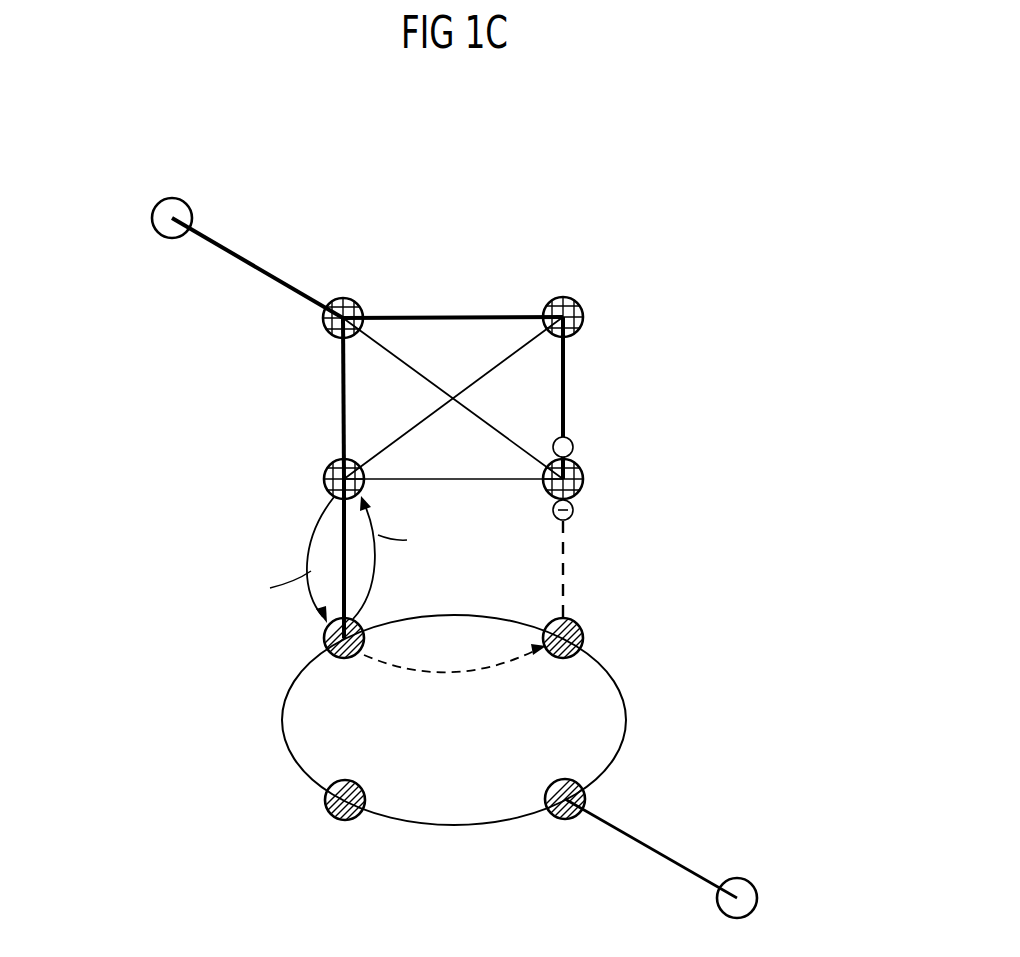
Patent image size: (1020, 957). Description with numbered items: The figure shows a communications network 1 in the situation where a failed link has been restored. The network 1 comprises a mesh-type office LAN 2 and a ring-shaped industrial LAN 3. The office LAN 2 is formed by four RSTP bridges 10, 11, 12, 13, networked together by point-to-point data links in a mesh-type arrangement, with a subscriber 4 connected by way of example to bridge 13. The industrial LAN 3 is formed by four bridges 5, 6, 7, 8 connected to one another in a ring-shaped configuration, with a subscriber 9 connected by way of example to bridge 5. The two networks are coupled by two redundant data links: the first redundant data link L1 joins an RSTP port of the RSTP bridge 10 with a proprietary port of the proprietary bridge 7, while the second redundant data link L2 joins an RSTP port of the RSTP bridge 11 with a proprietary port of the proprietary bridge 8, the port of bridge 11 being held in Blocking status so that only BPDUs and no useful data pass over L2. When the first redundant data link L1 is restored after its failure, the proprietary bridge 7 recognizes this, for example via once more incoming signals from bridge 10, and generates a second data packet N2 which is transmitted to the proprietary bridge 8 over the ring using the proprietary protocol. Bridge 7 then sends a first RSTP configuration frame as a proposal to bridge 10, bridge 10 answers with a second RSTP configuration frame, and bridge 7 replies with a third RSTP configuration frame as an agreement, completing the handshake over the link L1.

The communications network 1 is at (731, 397).
The office LAN 2 is at (607, 327).
The industrial LAN 3 is at (670, 719).
The subscriber 4 is at (171, 240).
The bridge 5 is at (566, 821).
The bridge 6 is at (325, 800).
The proprietary bridge 7 is at (325, 638).
The proprietary bridge 8 is at (583, 640).
The subscriber 9 is at (737, 877).
The RSTP bridge 10 is at (324, 480).
The RSTP bridge 11 is at (583, 480).
The RSTP bridge 12 is at (562, 296).
The RSTP bridge 13 is at (343, 297).
The first redundant data link L1 is at (343, 535).
The second redundant data link L2 is at (571, 560).
The second data packet N2 is at (437, 668).